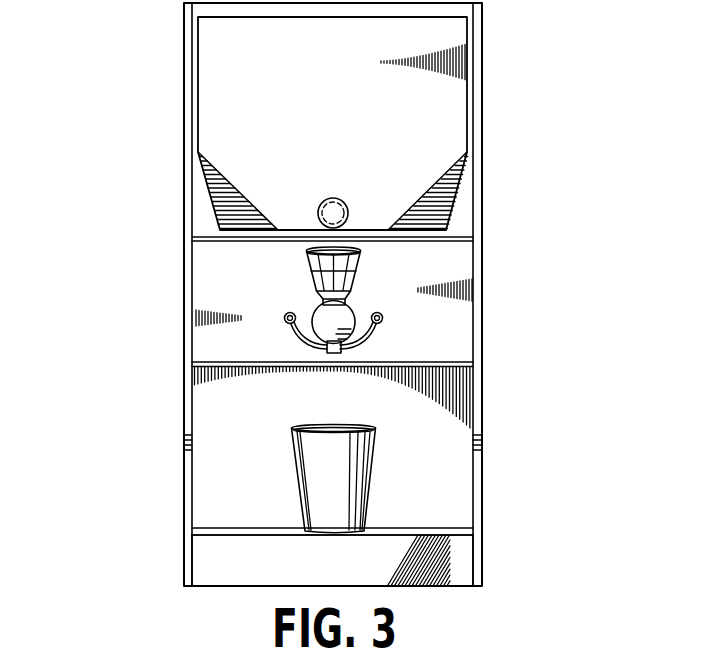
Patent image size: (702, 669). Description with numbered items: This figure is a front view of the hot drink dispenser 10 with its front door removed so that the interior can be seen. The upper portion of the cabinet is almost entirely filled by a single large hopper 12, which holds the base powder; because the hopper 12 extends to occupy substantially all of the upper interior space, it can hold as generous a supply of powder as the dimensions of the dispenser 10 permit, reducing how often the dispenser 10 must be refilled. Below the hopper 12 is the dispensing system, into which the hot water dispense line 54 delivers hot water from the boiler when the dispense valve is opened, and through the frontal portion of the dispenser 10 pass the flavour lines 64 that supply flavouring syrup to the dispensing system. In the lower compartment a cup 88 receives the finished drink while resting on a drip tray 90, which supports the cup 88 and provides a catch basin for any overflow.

The dispenser 10 is at (166, 45).
The hopper 12 is at (334, 100).
The hot water dispense line 54 is at (305, 275).
The flavour lines 64 is at (383, 323).
The cup 88 is at (325, 477).
The drip tray 90 is at (460, 565).